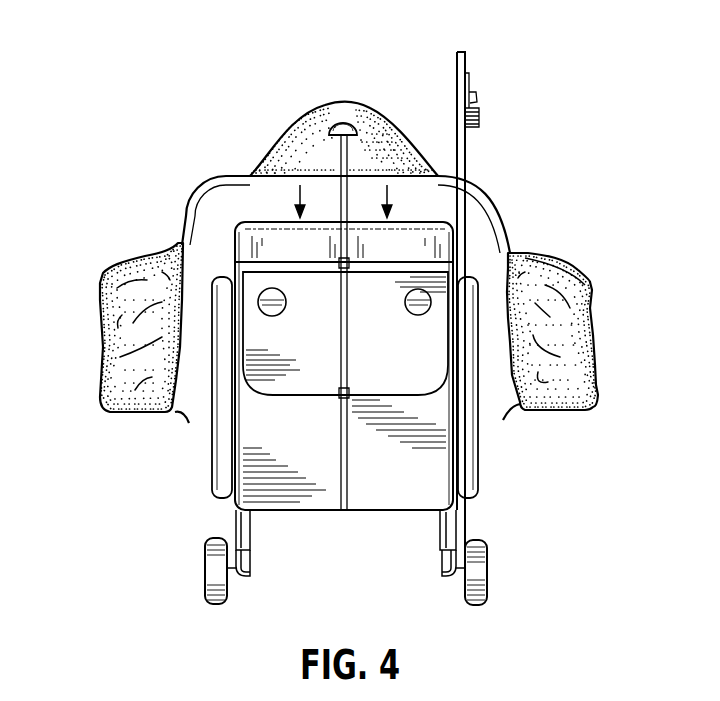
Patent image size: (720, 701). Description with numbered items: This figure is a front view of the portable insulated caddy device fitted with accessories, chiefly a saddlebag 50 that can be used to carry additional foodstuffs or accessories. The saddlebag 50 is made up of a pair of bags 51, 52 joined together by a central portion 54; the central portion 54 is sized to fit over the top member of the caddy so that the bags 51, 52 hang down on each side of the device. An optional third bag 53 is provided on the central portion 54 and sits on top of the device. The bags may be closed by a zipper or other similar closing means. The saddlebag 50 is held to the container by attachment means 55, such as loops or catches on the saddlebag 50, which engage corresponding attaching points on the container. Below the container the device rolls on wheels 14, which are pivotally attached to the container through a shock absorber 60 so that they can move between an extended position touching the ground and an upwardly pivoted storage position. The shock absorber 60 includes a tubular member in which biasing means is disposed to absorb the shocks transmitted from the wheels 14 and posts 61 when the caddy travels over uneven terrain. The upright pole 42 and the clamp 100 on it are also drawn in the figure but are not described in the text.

The wheels 14 is at (212, 576).
The vertical pole 42 is at (466, 58).
The saddlebag 50 is at (493, 183).
The bag 51 is at (100, 350).
The bag 52 is at (597, 352).
The third bag 53 is at (302, 132).
The central portion 54 is at (202, 192).
The attachment means 55 is at (183, 425).
The shock absorber 60 is at (250, 540).
The posts 61 is at (248, 572).
The clamp 100 is at (480, 118).